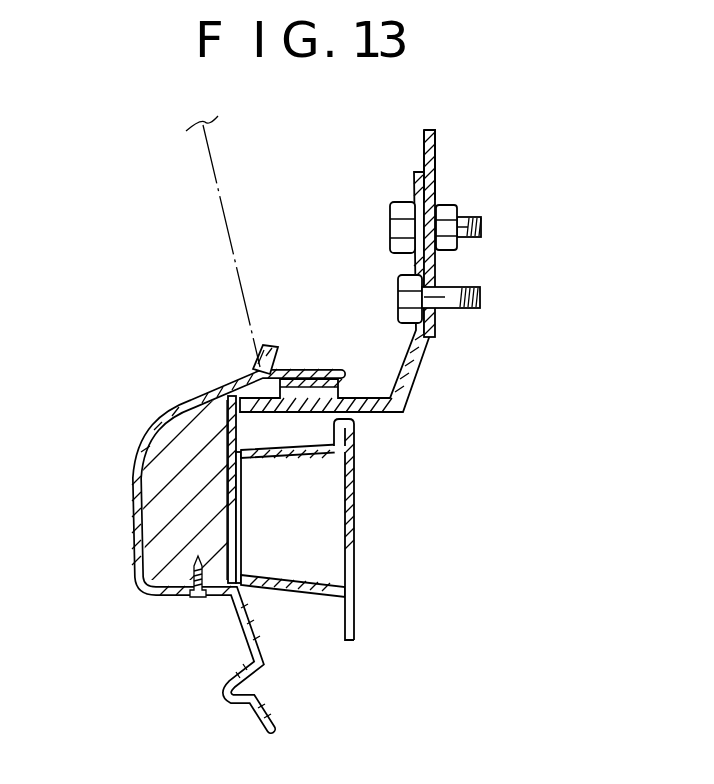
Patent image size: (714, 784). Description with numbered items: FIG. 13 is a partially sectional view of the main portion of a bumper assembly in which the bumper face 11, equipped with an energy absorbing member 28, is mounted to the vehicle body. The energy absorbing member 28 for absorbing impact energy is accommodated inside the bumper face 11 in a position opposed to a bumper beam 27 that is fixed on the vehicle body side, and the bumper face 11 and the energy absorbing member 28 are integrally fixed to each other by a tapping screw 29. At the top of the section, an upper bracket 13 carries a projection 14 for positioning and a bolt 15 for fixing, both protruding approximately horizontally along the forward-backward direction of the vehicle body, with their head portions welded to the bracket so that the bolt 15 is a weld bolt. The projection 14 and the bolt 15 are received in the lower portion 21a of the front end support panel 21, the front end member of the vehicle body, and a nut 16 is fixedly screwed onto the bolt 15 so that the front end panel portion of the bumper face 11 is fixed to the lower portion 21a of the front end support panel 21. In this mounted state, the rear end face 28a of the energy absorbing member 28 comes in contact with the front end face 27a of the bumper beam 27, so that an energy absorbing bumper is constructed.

The bumper face 11 is at (150, 420).
The upper bracket 13 is at (418, 368).
The projection for positioning 14 is at (400, 299).
The bolt for fixing 15 is at (392, 229).
The nut 16 is at (455, 244).
The front end support panel 21 is at (446, 146).
The lower portion of the front end support panel 21a is at (430, 168).
The bumper beam 27 is at (353, 493).
The front end face of the bumper beam 27a is at (235, 541).
The energy absorbing member 28 is at (160, 489).
The rear end face of the energy absorbing member 28a is at (240, 520).
The tapping screw 29 is at (198, 600).